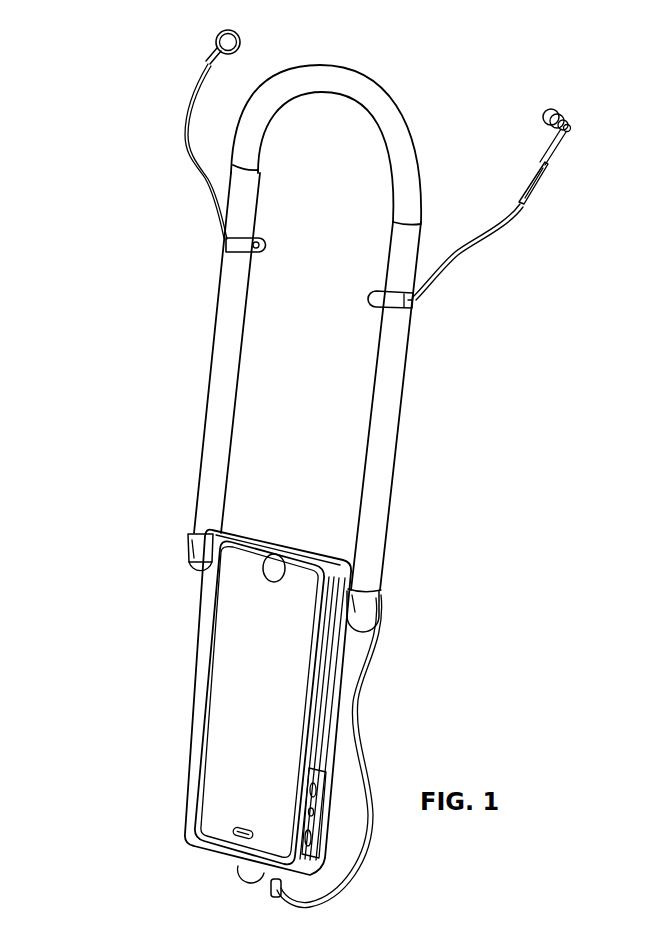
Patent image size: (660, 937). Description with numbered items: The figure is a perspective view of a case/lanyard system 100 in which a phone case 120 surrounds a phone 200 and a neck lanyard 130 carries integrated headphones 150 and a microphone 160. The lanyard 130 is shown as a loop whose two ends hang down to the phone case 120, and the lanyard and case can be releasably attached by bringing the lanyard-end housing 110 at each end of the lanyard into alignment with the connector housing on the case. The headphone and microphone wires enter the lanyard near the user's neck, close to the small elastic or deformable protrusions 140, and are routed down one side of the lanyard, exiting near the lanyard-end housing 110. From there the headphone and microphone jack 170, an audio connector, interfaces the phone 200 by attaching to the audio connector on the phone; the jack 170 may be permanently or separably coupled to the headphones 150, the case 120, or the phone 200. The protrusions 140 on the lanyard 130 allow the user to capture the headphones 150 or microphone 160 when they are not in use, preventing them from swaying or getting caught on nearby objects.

The case/lanyard system 100 is at (156, 495).
The lanyard-end housing 110 is at (192, 568).
The phone case 120 is at (195, 665).
The neck lanyard 130 is at (405, 263).
The elastic or deformable protrusions 140 is at (410, 308).
The headphones 150 is at (217, 42).
The microphone 160 is at (540, 180).
The headphone and microphone jack 170 is at (270, 887).
The phone 200 is at (222, 782).